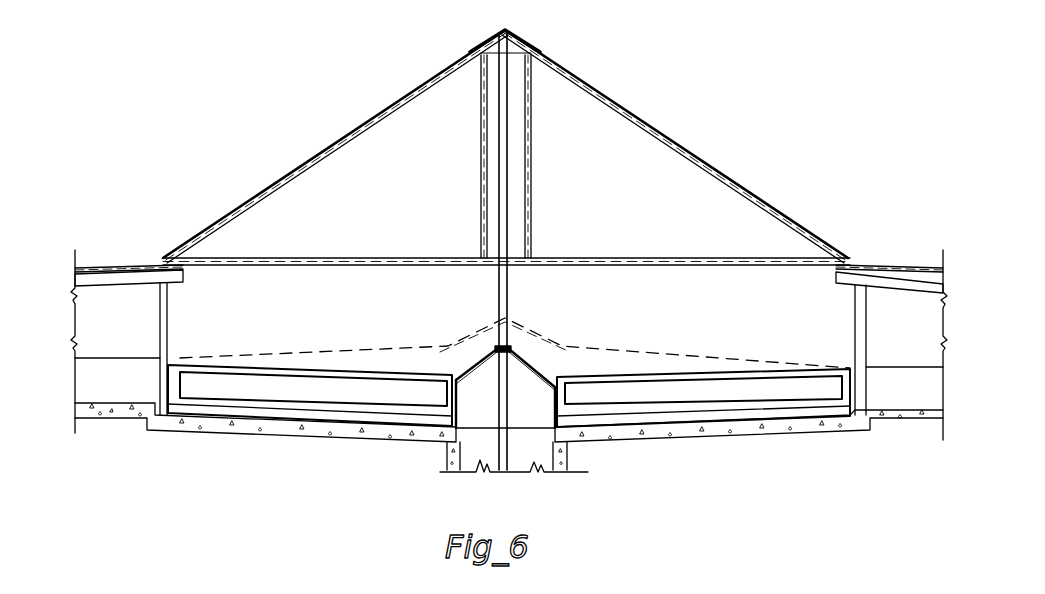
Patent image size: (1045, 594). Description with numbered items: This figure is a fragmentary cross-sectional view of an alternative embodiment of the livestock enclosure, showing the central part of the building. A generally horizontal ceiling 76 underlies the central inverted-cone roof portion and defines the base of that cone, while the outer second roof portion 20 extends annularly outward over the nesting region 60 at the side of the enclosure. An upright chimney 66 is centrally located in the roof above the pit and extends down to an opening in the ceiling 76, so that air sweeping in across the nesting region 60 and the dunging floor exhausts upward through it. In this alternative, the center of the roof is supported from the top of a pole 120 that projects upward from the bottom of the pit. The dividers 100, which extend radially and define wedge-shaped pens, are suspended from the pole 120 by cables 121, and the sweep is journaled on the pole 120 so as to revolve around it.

The second roof portion 20 is at (900, 270).
The nesting region 60 is at (509, 345).
The chimney 66 is at (481, 133).
The ceiling 76 is at (382, 258).
The dividers 100 is at (336, 345).
The pole 120 is at (500, 130).
The cables 121 is at (455, 376).